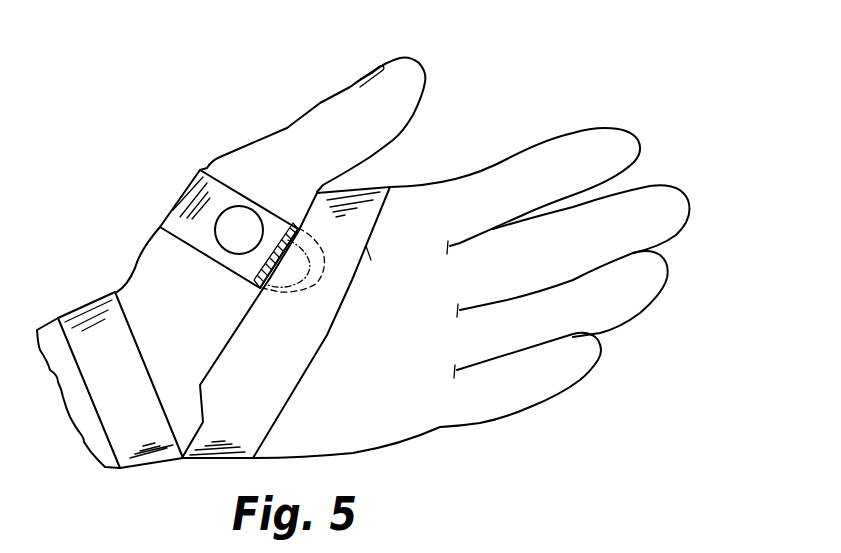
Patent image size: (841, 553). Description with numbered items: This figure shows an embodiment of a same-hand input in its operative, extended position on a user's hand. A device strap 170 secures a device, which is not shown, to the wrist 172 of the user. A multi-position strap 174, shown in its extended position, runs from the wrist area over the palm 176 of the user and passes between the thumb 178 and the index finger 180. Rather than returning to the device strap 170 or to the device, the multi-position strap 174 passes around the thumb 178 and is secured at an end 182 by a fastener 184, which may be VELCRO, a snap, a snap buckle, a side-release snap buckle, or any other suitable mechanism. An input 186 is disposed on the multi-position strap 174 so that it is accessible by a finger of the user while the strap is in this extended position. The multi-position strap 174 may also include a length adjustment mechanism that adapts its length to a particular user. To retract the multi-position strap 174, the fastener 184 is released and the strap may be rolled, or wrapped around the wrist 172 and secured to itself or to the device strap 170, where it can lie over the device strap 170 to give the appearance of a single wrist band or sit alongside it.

The device strap 170 is at (96, 293).
The wrist 172 is at (38, 330).
The multi-position strap 174 is at (202, 168).
The palm 176 is at (377, 435).
The thumb 178 is at (424, 71).
The index finger 180 is at (636, 141).
The end 182 is at (306, 295).
The fastener 184 is at (297, 227).
The input 186 is at (222, 248).